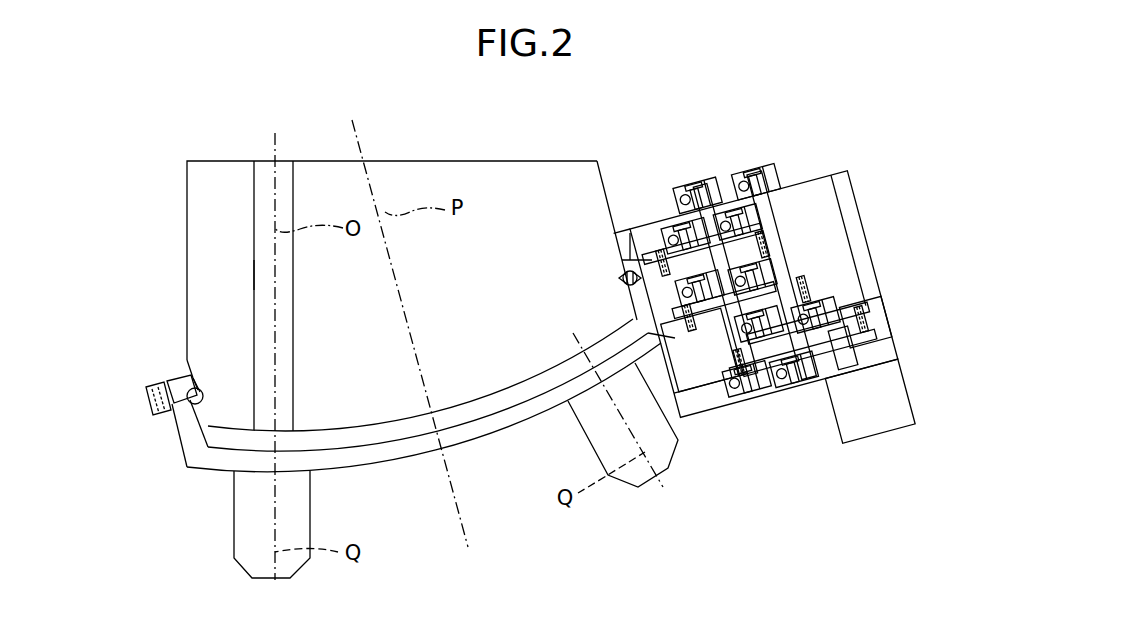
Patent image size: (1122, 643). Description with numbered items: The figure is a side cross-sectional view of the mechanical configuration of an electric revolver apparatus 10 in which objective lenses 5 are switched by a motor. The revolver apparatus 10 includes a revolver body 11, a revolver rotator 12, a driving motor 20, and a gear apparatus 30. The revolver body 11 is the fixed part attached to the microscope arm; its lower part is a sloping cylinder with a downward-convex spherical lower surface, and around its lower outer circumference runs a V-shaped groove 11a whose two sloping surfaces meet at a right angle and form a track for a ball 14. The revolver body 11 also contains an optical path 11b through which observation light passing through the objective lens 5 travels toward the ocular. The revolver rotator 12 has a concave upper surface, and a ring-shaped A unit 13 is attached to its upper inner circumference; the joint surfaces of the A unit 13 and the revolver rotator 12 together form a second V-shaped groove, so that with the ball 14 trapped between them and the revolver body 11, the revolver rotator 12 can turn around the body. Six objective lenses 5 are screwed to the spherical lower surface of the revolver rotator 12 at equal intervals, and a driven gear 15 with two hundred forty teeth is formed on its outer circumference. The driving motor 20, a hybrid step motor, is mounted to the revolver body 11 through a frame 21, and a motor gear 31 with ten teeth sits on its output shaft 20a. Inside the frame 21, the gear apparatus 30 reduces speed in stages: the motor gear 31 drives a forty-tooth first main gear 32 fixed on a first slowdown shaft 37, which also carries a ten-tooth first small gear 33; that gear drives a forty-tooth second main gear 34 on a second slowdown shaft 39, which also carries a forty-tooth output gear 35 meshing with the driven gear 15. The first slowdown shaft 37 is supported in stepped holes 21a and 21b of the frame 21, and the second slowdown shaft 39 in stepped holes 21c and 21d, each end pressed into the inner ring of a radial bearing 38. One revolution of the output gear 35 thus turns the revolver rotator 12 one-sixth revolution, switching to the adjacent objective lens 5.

The objective lens 5 is at (302, 508).
The revolver apparatus 10 is at (430, 468).
The revolver body 11 is at (187, 216).
The V-shaped groove 11a is at (200, 388).
The optical path 11b is at (253, 272).
The revolver rotator 12 is at (493, 428).
The A unit 13 is at (180, 378).
The ball 14 is at (204, 396).
The driven gear 15 is at (146, 398).
The driving motor 20 is at (870, 401).
The output shaft 20a is at (865, 322).
The frame 21 is at (868, 216).
The stepped hole 21a is at (843, 348).
The stepped hole 21b is at (755, 182).
The stepped hole 21c is at (793, 369).
The stepped hole 21d is at (697, 195).
The gear apparatus 30 is at (805, 262).
The motor gear 31 is at (861, 319).
The first main gear 32 is at (799, 340).
The first small gear 33 is at (710, 272).
The second main gear 34 is at (700, 350).
The output gear 35 is at (781, 275).
The first slowdown shaft 37 is at (725, 280).
The radial bearing 38 is at (740, 302).
The second slowdown shaft 39 is at (746, 379).